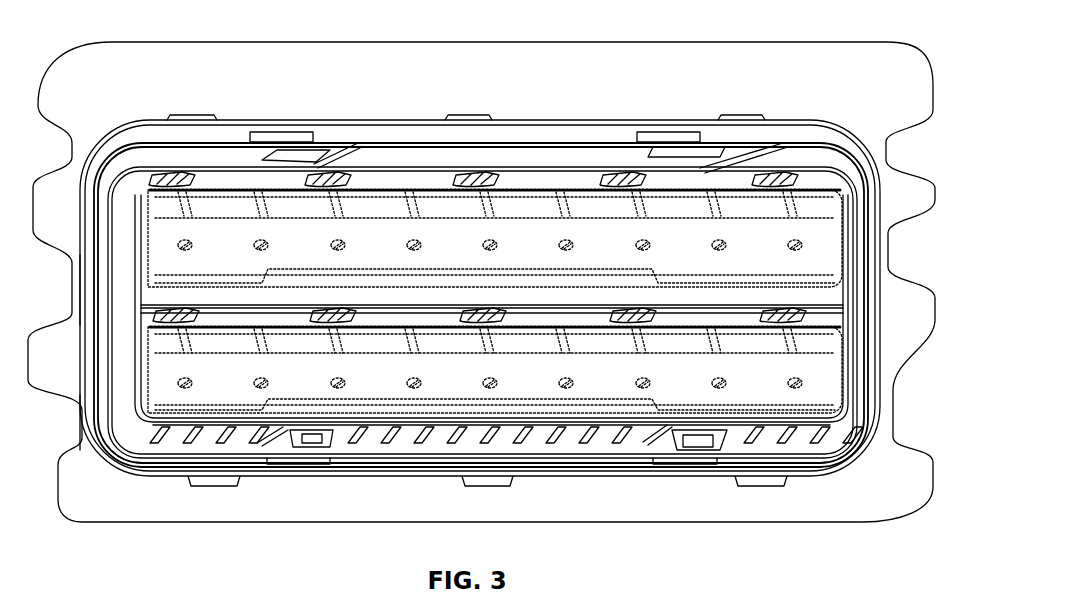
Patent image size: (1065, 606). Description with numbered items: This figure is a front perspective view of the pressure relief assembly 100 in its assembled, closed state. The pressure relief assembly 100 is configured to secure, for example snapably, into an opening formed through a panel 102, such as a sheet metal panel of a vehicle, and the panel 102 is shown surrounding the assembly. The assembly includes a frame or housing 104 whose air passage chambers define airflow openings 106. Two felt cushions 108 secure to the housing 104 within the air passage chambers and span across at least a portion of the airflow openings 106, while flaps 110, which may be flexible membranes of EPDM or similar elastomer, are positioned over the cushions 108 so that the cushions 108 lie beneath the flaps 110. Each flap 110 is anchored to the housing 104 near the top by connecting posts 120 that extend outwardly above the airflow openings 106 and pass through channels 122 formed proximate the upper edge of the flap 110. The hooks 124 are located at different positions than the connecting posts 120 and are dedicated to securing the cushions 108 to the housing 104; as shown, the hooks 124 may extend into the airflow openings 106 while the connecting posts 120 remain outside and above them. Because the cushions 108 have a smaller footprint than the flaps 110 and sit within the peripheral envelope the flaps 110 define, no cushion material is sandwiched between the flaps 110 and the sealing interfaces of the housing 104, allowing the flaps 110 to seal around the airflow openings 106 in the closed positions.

The pressure relief assembly 100 is at (722, 104).
The panel 102 is at (892, 67).
The housing 104 is at (875, 165).
The airflow openings 106 is at (268, 200).
The cushions 108 is at (822, 267).
The flaps 110 is at (815, 213).
The connecting posts 120 is at (185, 176).
The channels 122 is at (160, 192).
The hooks 124 is at (205, 187).